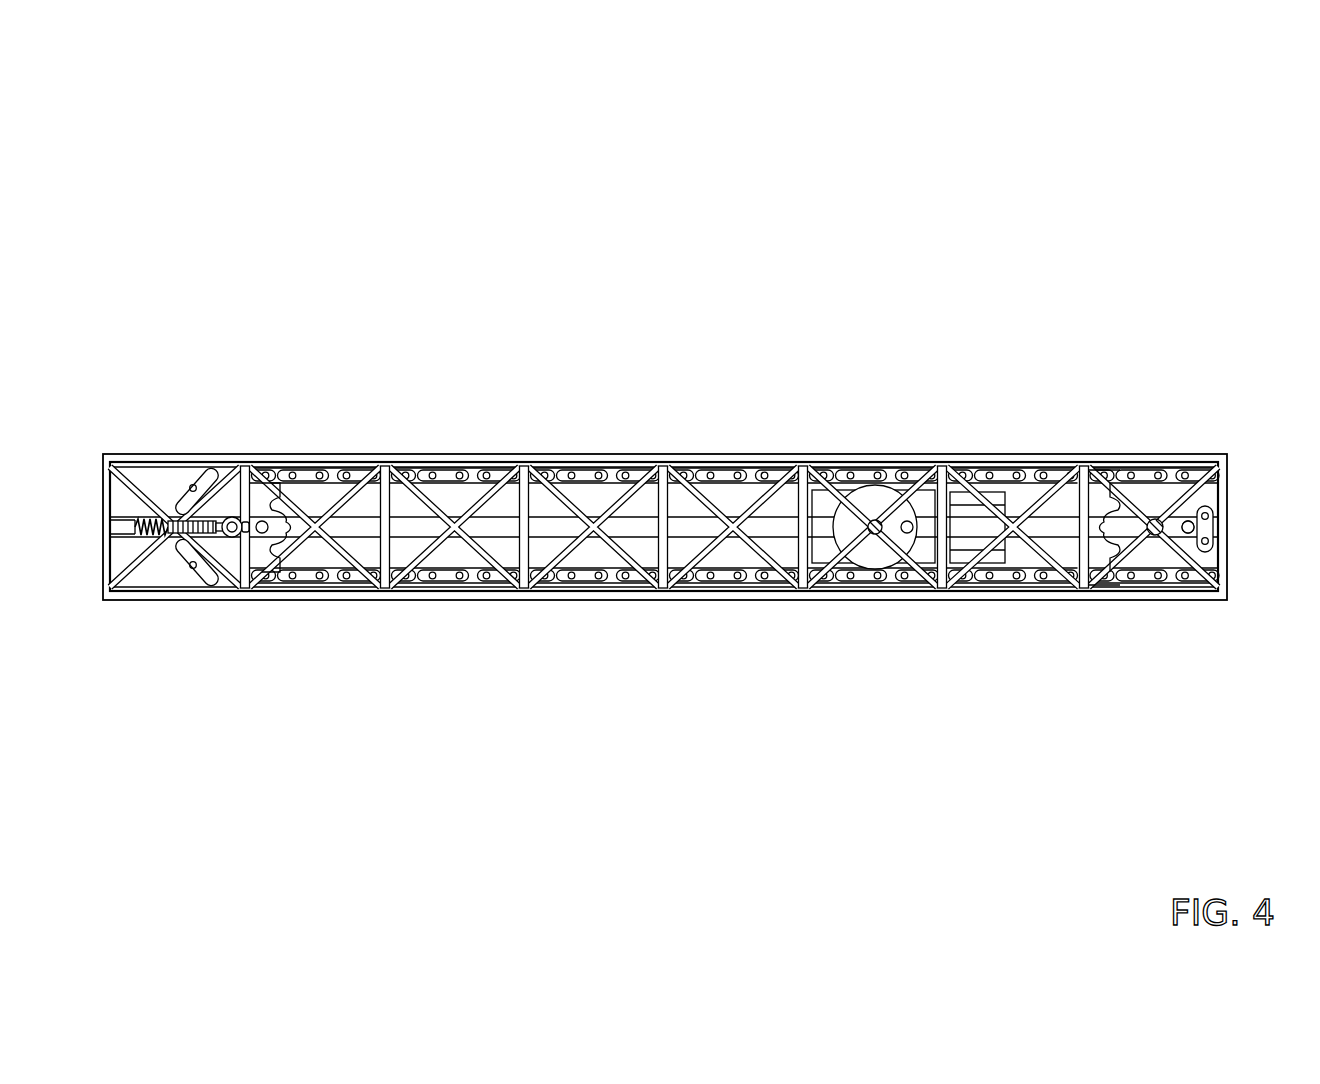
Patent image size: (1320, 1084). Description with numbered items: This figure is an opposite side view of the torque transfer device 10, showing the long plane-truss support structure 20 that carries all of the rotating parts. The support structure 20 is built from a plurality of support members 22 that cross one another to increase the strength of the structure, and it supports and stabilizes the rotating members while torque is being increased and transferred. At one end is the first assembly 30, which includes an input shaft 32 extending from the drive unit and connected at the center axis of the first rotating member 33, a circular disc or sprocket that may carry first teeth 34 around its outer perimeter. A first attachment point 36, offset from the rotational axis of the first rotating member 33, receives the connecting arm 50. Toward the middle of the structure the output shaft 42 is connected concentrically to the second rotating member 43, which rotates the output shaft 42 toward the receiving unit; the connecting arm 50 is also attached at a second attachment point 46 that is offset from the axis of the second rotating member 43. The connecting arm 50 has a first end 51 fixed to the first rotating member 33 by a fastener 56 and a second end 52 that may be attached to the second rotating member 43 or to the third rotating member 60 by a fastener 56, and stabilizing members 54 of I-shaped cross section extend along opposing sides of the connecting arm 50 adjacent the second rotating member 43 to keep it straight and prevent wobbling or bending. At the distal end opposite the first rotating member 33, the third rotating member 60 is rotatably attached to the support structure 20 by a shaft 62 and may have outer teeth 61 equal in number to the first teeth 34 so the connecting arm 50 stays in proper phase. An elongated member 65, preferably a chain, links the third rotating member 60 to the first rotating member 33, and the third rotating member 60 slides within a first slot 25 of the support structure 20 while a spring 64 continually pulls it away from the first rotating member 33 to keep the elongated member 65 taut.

The torque transfer device 10 is at (218, 166).
The support structure 20 is at (722, 448).
The support members 22 is at (630, 500).
The first slot 25 is at (163, 515).
The first assembly 30 is at (1147, 614).
The input shaft 32 is at (1198, 495).
The first rotating member 33 is at (1095, 498).
The first teeth 34 is at (1075, 495).
The first attachment point 36 is at (1196, 531).
The output shaft 42 is at (850, 540).
The second rotating member 43 is at (882, 565).
The second attachment point 46 is at (912, 538).
The connecting arm 50 is at (500, 523).
The first end 51 is at (1045, 523).
The second end 52 is at (342, 500).
The stabilizing members 54 is at (958, 500).
The fastener 56 is at (264, 520).
The third rotating member 60 is at (218, 555).
The outer teeth 61 is at (300, 565).
The shaft 62 is at (208, 500).
The spring 64 is at (140, 528).
The elongated member 65 is at (604, 580).